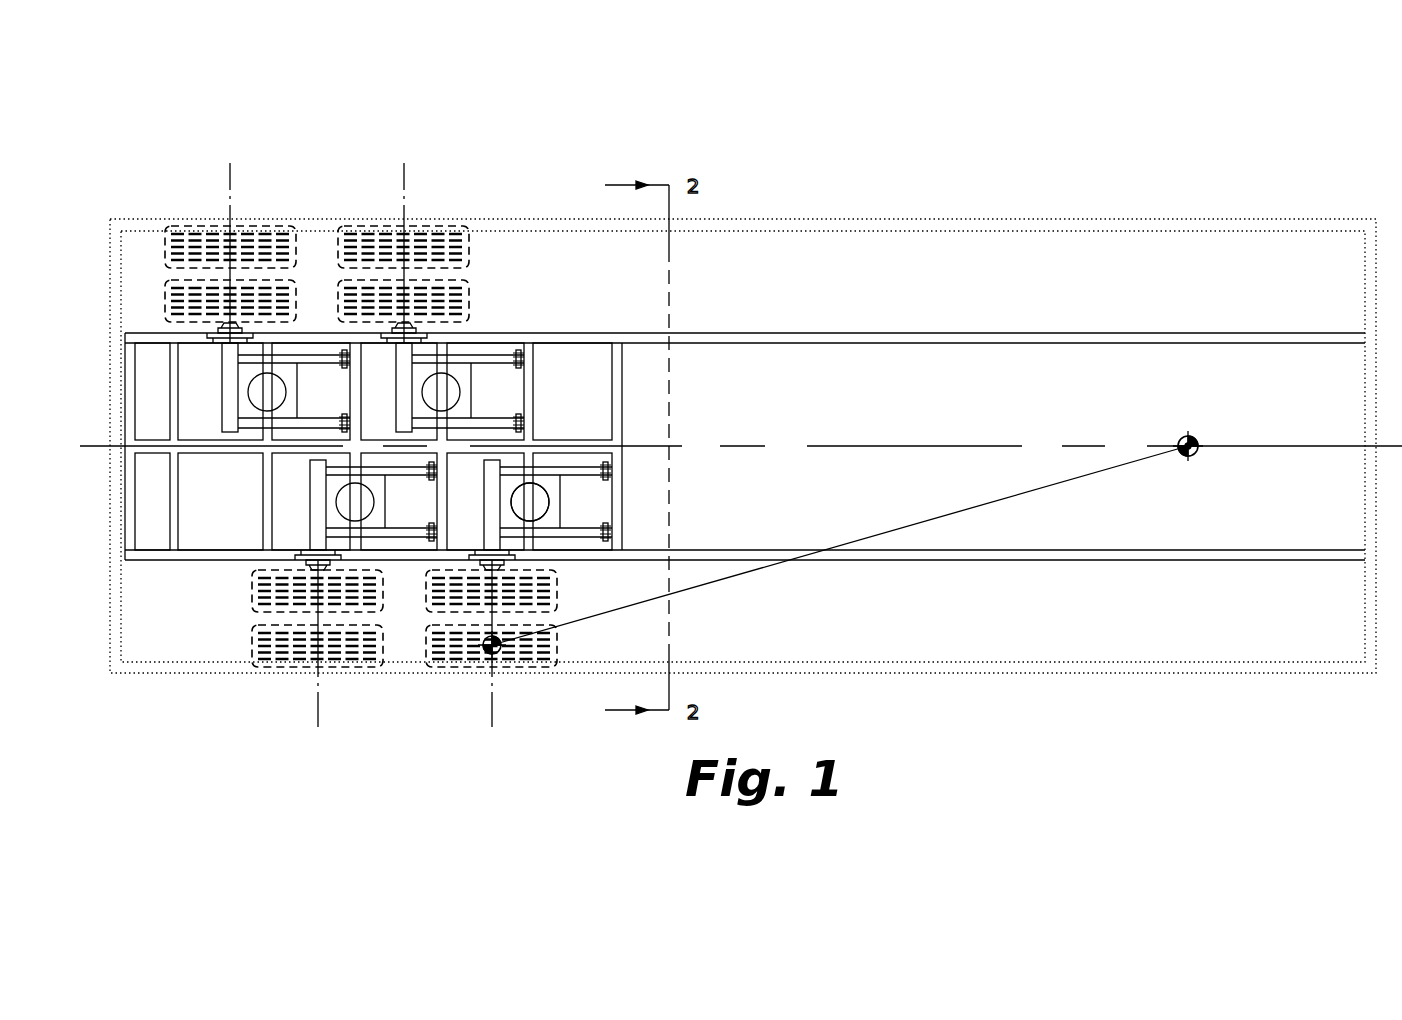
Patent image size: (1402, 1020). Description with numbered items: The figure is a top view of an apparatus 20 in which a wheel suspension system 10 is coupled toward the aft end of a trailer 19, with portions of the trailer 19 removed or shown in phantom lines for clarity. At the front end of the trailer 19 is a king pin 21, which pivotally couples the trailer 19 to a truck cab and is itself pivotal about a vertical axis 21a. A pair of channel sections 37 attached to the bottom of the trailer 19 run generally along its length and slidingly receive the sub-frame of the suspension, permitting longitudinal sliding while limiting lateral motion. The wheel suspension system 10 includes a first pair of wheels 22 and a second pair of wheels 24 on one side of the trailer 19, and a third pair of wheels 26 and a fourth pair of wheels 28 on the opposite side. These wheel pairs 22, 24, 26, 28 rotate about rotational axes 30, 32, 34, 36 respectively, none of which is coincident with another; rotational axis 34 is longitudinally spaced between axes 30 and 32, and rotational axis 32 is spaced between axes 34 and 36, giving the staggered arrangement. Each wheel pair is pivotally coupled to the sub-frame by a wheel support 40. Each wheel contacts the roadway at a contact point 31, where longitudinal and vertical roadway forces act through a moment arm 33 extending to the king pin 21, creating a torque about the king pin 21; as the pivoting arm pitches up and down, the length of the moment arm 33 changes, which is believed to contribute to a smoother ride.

The wheel suspension system 10 is at (172, 462).
The trailer 19 is at (856, 509).
The apparatus 20 is at (1185, 163).
The king pin 21 is at (1196, 440).
The vertical axis 21a is at (1192, 456).
The first pair of wheels 22 is at (557, 580).
The second pair of wheels 24 is at (255, 583).
The third pair of wheels 26 is at (470, 250).
The fourth pair of wheels 28 is at (190, 250).
The rotational axis 30 is at (492, 703).
The roadway contact point 31 is at (507, 651).
The rotational axis 32 is at (317, 703).
The moment arm 33 is at (1040, 489).
The rotational axis 34 is at (404, 193).
The rotational axis 36 is at (232, 192).
The channel sections 37 is at (910, 338).
The wheel support 40 is at (548, 487).